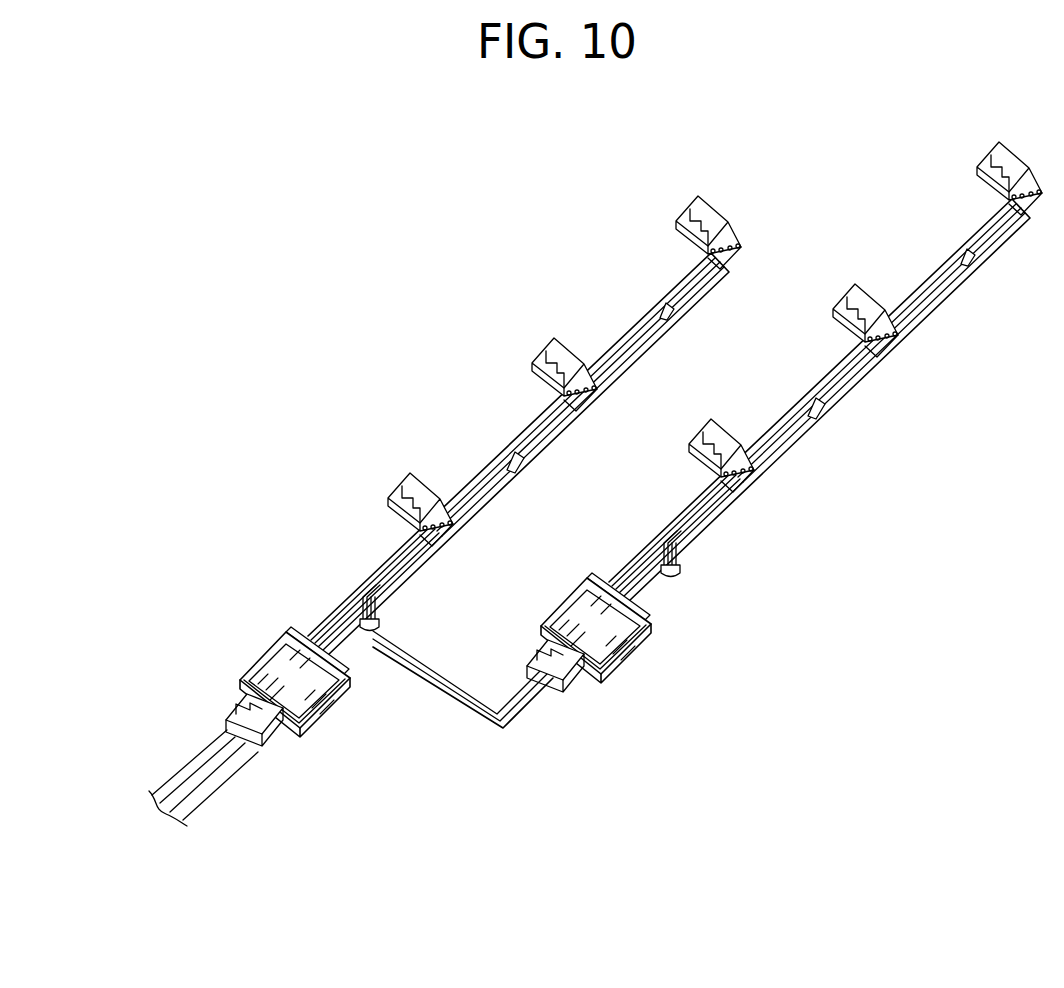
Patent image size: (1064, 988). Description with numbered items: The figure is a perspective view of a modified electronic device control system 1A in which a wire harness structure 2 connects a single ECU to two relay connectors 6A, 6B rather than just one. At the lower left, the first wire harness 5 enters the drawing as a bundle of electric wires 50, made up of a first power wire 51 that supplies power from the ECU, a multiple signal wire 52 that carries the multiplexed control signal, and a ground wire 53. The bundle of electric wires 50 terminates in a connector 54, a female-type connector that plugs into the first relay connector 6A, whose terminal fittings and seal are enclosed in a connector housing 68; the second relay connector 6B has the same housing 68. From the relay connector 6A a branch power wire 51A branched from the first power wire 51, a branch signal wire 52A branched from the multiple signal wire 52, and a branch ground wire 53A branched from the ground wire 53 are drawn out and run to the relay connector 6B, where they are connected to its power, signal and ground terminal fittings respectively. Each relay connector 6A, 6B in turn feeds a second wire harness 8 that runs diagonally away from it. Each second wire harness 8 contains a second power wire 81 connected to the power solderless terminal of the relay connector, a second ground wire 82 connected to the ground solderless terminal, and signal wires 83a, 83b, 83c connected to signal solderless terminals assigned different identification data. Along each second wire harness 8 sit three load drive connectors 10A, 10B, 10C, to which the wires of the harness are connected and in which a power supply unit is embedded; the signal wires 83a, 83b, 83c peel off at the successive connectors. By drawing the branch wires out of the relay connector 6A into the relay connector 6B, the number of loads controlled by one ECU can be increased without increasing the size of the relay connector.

The electronic device control system 1A is at (544, 170).
The wire harness structure 2 is at (479, 260).
The first wire harness 5 is at (193, 719).
The second wire harness 8 is at (528, 295).
The load drive connector 10A is at (428, 475).
The load drive connector 10B is at (570, 347).
The load drive connector 10C is at (716, 208).
The relay connector 6A is at (257, 650).
The relay connector 6B is at (558, 603).
The connector housing 68 is at (314, 699).
The second power wire 81 is at (310, 638).
The second ground wire 82 is at (378, 628).
The signal wire 83a is at (352, 600).
The signal wire 83b is at (512, 455).
The signal wire 83c is at (668, 314).
The bundle of electric wires 50 is at (298, 777).
The first power wire 51 is at (194, 794).
The multiple signal wire 52 is at (204, 783).
The ground wire 53 is at (223, 773).
The connector 54 is at (273, 741).
The branch power wire 51A is at (411, 654).
The branch signal wire 52A is at (433, 680).
The branch ground wire 53A is at (459, 706).